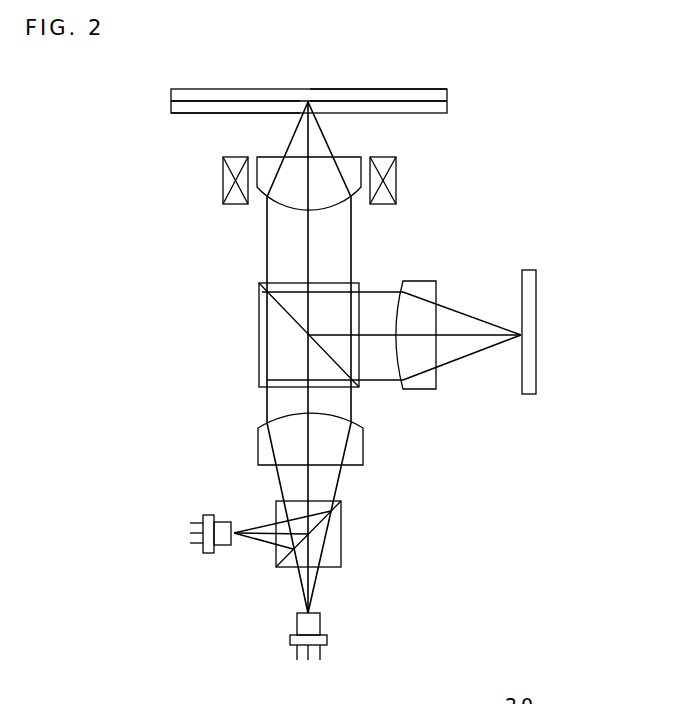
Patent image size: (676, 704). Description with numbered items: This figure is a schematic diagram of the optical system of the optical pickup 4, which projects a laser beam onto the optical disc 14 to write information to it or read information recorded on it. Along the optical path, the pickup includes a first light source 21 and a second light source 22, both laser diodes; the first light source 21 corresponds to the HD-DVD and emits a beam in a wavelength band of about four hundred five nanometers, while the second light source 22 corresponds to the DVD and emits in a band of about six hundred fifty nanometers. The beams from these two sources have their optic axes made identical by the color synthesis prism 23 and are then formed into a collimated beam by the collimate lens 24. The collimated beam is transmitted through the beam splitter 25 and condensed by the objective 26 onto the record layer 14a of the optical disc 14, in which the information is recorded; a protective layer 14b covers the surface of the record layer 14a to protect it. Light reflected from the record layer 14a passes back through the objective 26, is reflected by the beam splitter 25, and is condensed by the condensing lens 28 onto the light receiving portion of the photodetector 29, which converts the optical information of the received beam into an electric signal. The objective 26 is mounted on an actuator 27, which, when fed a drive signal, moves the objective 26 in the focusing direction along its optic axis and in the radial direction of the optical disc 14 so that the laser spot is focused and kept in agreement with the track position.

The optical pickup 4 is at (555, 152).
The optical disc 14 is at (171, 100).
The record layer 14a is at (370, 102).
The protective layer 14b is at (203, 113).
The first light source 21 is at (292, 634).
The second light source 22 is at (206, 515).
The color synthesis prism 23 is at (341, 540).
The collimate lens 24 is at (363, 455).
The beam splitter 25 is at (259, 332).
The objective 26 is at (287, 198).
The actuator 27 is at (223, 177).
The condensing lens 28 is at (425, 389).
The photodetector 29 is at (537, 320).